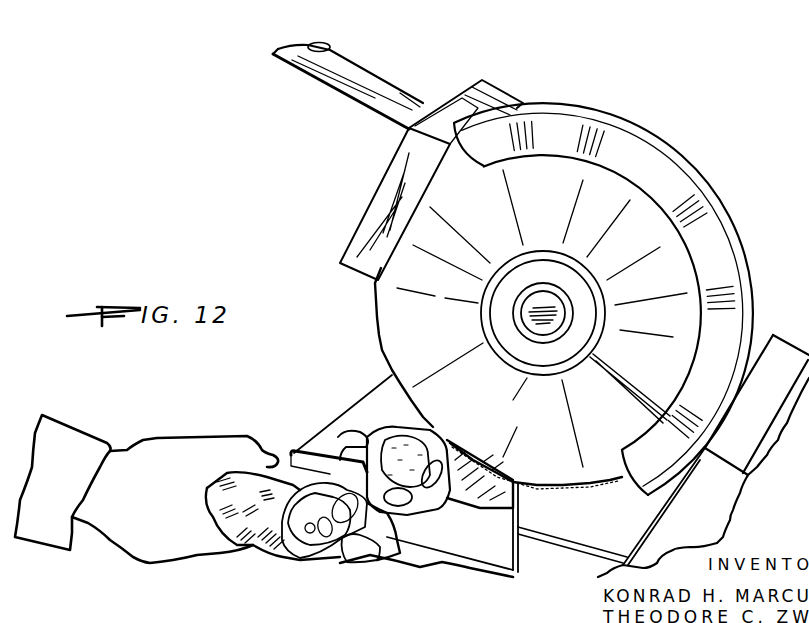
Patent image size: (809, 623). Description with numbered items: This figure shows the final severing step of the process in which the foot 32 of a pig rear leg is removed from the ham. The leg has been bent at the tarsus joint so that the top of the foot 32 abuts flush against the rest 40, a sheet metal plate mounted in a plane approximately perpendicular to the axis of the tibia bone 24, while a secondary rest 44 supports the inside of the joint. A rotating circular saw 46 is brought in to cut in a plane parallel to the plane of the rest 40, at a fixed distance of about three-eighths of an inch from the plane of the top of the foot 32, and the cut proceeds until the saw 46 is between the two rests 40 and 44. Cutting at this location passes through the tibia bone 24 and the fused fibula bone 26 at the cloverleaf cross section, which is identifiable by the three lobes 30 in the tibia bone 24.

The tibia bone 24 is at (438, 428).
The fibula bone 26 is at (443, 485).
The three-lobes 30 is at (393, 437).
The foot 32 is at (268, 541).
The rest 40 is at (290, 452).
The secondary rest 44 is at (356, 430).
The rotating saw 46 is at (567, 463).